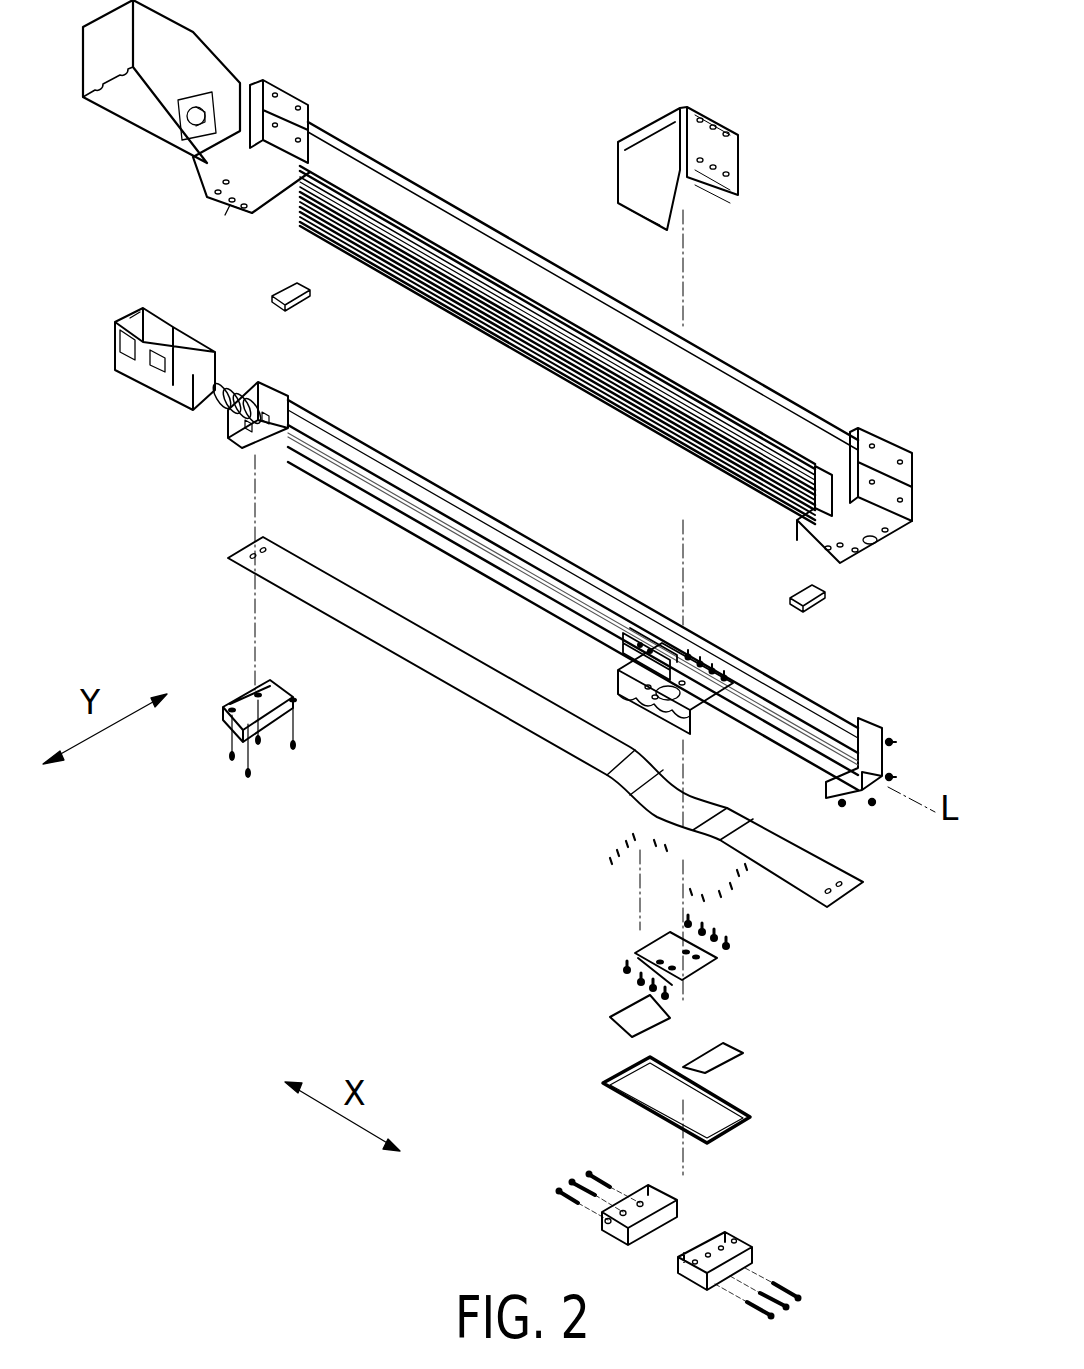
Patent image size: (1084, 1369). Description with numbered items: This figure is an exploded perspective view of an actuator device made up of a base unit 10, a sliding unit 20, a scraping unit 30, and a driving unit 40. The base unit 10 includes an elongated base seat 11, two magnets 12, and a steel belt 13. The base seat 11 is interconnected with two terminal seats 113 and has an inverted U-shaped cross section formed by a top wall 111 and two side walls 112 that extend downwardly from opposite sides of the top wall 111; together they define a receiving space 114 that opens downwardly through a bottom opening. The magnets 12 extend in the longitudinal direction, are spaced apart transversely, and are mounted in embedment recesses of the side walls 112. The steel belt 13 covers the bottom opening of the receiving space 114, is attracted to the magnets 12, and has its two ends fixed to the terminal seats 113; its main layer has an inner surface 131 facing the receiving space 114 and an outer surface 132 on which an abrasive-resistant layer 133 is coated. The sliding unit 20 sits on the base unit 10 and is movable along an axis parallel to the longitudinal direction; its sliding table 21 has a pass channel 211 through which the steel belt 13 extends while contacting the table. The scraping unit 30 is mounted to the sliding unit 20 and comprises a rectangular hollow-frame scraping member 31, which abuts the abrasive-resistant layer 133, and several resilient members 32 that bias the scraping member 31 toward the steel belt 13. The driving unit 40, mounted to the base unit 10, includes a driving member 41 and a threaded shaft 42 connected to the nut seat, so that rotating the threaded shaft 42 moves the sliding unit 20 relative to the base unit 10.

The base unit 10 is at (509, 281).
The base seat 11 is at (509, 281).
The top wall 111 is at (357, 150).
The side walls 112 is at (421, 215).
The terminal seats 113 is at (282, 117).
The receiving space 114 is at (742, 425).
The magnets 12 is at (813, 713).
The steel belt 13 is at (545, 722).
The inner surface 131 is at (545, 722).
The outer surface 132 is at (545, 722).
The abrasive-resistant layer 133 is at (470, 615).
The sliding unit 20 is at (649, 628).
The sliding table 21 is at (649, 628).
The pass channel 211 is at (626, 660).
The scraping unit 30 is at (761, 1100).
The scraping member 31 is at (746, 1131).
The resilient members 32 is at (723, 897).
The driving unit 40 is at (162, 406).
The driving member 41 is at (165, 404).
The threaded shaft 42 is at (564, 596).